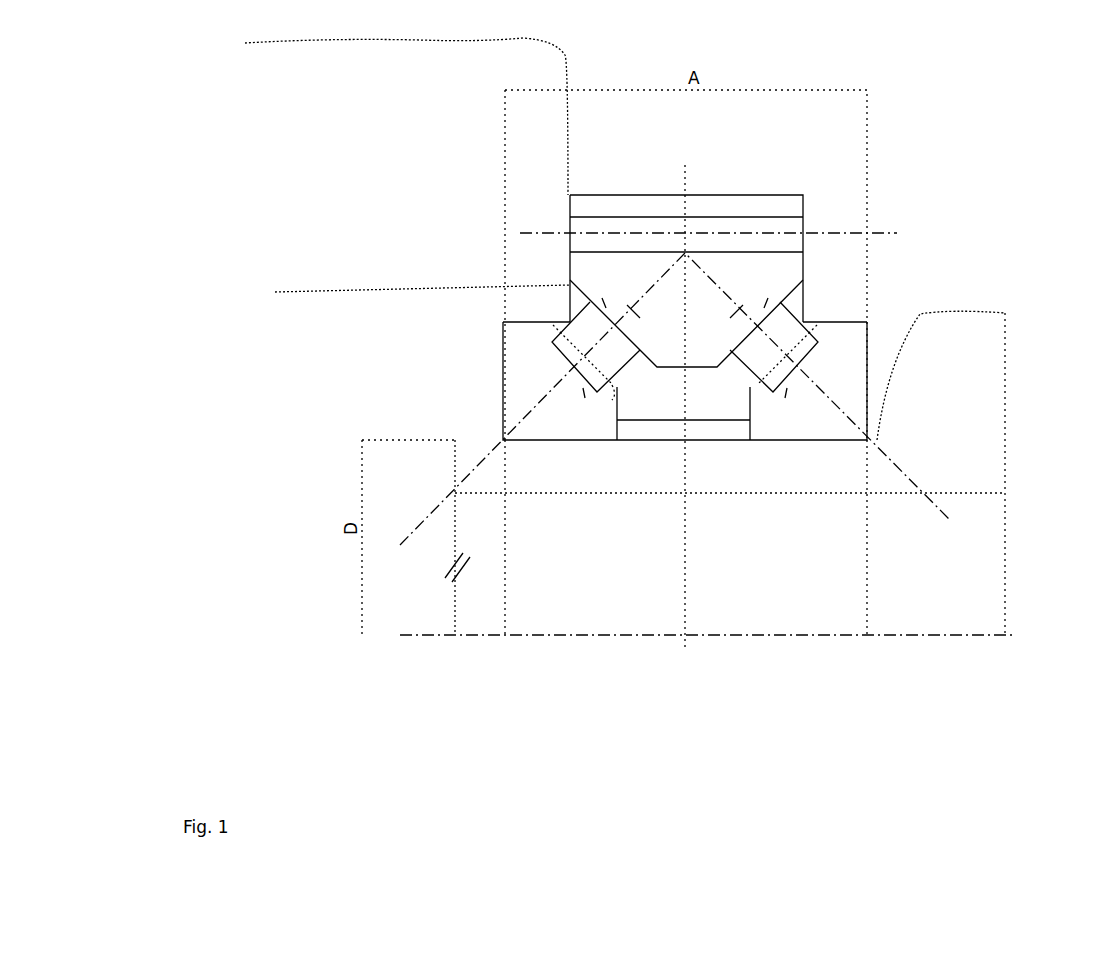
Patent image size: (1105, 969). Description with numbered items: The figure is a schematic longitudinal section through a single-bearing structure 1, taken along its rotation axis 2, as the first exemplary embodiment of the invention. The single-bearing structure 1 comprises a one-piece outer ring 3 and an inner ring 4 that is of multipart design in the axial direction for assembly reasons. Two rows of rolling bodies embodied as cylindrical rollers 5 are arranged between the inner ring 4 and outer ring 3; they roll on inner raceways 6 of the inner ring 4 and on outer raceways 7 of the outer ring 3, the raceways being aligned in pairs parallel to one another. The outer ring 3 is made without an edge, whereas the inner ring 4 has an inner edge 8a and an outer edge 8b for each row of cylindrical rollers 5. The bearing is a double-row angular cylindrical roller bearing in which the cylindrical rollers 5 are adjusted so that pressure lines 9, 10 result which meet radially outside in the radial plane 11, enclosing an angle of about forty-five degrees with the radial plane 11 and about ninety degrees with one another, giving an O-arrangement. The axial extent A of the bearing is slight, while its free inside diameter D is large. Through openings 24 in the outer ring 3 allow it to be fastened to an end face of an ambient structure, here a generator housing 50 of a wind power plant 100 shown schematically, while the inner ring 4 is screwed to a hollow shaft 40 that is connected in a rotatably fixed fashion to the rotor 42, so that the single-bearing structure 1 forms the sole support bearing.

The single-bearing structure 1 is at (903, 184).
The rotation axis 2 is at (975, 635).
The outer ring 3 is at (782, 207).
The inner ring 4 is at (847, 380).
The cylindrical rollers 5 is at (562, 345).
The inner raceways 6 is at (585, 392).
The outer raceways 7 is at (606, 310).
The inner edge 8a is at (612, 400).
The outer edge 8b is at (563, 325).
The pressure line 9 is at (640, 318).
The pressure line 10 is at (730, 318).
The radial plane 11 is at (688, 190).
The through openings 24 is at (603, 225).
The hollow shaft 40 is at (470, 446).
The rotor 42 is at (992, 366).
The generator housing 50 is at (552, 63).
The wind power plant 100 is at (283, 357).